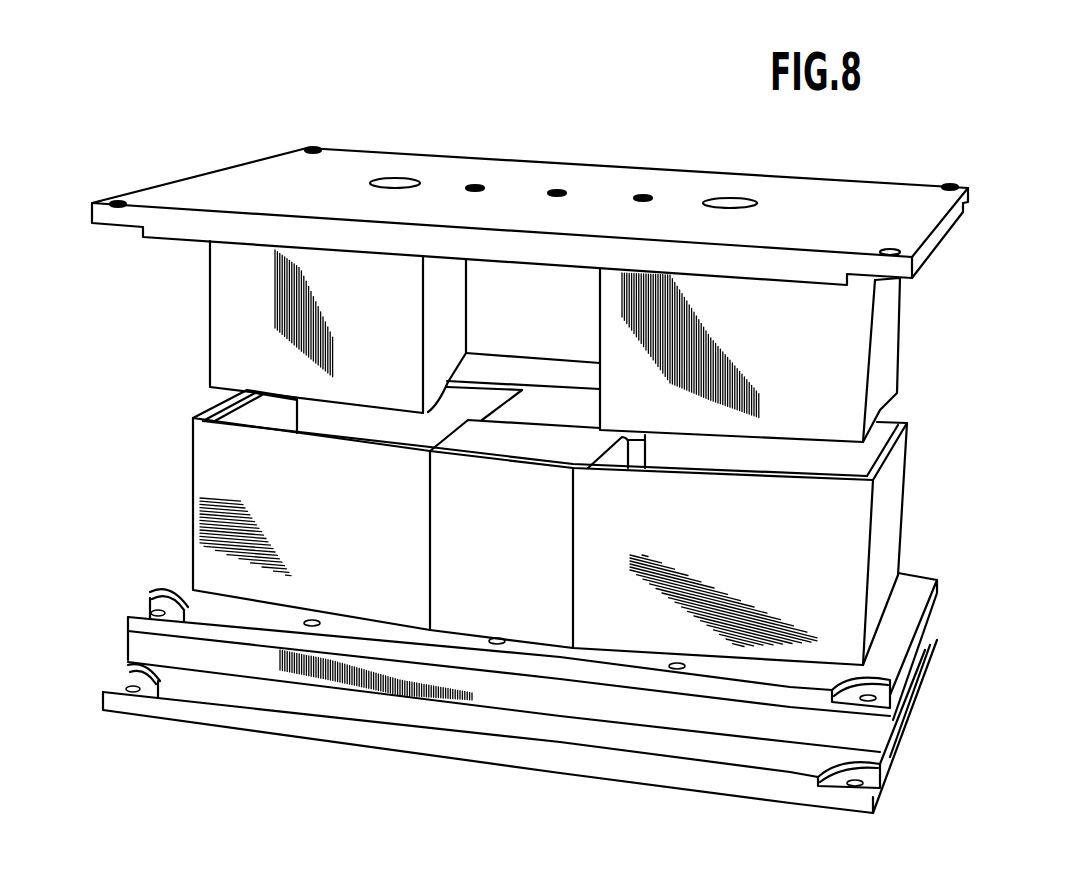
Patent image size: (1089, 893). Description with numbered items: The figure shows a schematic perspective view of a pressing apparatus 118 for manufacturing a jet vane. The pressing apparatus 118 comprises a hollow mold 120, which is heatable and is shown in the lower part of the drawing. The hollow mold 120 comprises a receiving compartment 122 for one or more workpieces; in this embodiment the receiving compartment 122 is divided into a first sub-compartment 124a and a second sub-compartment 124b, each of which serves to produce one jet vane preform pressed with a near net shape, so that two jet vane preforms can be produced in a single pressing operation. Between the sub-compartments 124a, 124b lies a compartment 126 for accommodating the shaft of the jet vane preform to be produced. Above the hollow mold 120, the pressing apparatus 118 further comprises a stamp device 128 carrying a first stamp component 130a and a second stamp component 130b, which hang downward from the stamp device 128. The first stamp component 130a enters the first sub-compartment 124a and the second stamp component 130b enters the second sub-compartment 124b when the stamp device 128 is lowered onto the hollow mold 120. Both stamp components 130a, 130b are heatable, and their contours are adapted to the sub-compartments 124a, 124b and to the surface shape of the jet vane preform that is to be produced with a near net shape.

The pressing apparatus 118 is at (197, 148).
The stamp device 128 is at (947, 229).
The first stamp component 130a is at (231, 334).
The second stamp component 130b is at (850, 340).
The receiving compartment 122 is at (832, 467).
The hollow mold 120 is at (857, 557).
The first sub-compartment 124a is at (307, 432).
The second sub-compartment 124b is at (703, 462).
The compartment 126 is at (480, 420).